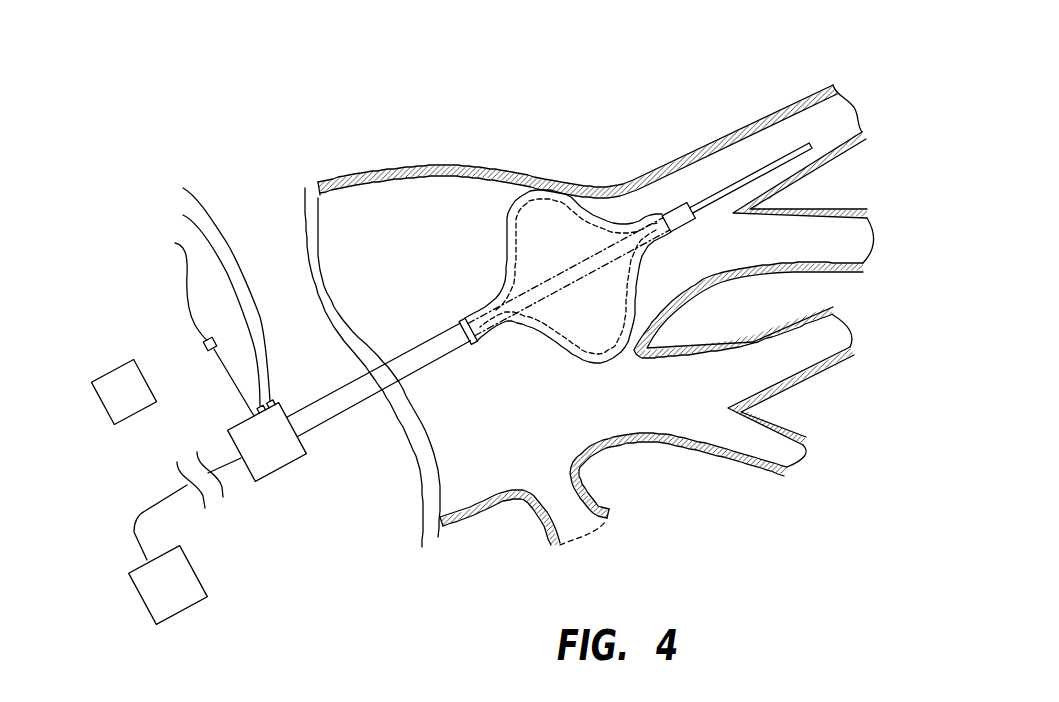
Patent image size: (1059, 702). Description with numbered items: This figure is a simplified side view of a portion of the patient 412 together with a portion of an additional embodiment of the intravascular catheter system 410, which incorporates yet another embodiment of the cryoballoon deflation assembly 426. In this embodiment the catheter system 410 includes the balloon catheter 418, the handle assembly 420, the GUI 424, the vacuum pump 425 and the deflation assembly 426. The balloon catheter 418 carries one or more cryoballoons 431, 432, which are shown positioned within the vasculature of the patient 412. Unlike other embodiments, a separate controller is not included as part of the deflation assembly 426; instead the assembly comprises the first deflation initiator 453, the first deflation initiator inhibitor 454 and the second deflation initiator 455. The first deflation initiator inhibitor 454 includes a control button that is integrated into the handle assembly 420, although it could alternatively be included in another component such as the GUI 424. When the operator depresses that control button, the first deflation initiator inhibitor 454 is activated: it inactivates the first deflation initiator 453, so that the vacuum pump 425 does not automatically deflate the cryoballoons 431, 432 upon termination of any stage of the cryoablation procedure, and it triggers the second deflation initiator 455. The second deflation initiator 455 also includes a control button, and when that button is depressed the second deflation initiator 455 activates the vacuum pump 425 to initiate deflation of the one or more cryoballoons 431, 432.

The catheter system 410 is at (372, 162).
The patient 412 is at (800, 101).
The balloon catheter 418 is at (488, 352).
The handle assembly 420 is at (280, 473).
The GUI 424 is at (113, 363).
The vacuum pump 425 is at (140, 593).
The deflation assembly 426 is at (108, 167).
The cryoballoon 431 is at (507, 253).
The cryoballoon 432 is at (630, 185).
The first deflation initiator 453 is at (175, 243).
The first deflation initiator inhibitor 454 is at (183, 188).
The second deflation initiator 455 is at (183, 215).